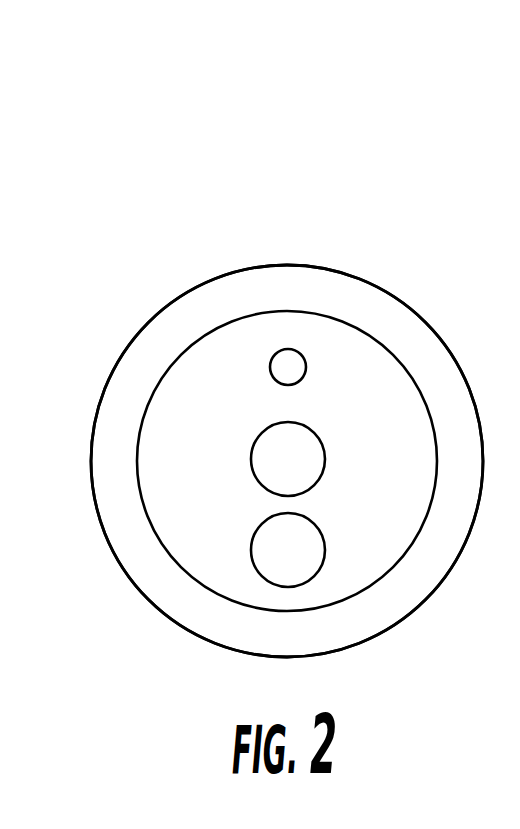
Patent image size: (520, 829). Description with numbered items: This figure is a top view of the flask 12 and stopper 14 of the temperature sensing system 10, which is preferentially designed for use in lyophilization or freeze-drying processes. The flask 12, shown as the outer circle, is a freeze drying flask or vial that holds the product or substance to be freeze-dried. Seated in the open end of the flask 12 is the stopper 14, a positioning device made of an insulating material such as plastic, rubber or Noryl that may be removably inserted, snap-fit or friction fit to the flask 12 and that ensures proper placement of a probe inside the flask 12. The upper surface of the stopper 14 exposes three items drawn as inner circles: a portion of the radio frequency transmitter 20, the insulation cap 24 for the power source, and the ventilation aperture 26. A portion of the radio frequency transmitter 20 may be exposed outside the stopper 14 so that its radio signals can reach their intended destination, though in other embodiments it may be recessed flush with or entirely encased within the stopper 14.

The temperature sensing system 10 is at (285, 141).
The flask 12 is at (293, 265).
The stopper 14 is at (325, 310).
The radio frequency transmitter 20 is at (287, 460).
The insulation cap 24 is at (288, 548).
The ventilation aperture 26 is at (283, 365).